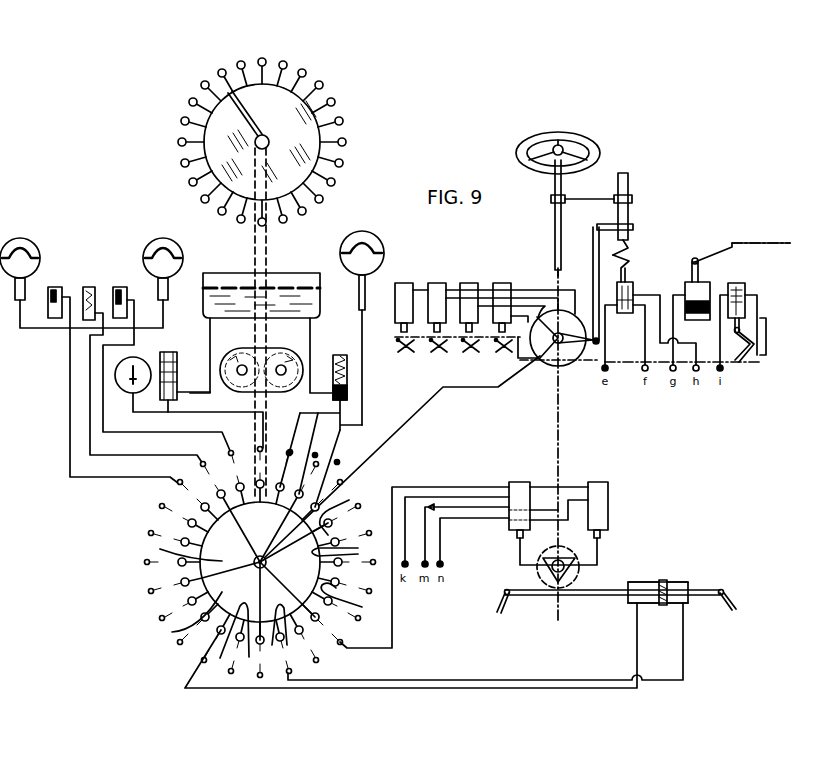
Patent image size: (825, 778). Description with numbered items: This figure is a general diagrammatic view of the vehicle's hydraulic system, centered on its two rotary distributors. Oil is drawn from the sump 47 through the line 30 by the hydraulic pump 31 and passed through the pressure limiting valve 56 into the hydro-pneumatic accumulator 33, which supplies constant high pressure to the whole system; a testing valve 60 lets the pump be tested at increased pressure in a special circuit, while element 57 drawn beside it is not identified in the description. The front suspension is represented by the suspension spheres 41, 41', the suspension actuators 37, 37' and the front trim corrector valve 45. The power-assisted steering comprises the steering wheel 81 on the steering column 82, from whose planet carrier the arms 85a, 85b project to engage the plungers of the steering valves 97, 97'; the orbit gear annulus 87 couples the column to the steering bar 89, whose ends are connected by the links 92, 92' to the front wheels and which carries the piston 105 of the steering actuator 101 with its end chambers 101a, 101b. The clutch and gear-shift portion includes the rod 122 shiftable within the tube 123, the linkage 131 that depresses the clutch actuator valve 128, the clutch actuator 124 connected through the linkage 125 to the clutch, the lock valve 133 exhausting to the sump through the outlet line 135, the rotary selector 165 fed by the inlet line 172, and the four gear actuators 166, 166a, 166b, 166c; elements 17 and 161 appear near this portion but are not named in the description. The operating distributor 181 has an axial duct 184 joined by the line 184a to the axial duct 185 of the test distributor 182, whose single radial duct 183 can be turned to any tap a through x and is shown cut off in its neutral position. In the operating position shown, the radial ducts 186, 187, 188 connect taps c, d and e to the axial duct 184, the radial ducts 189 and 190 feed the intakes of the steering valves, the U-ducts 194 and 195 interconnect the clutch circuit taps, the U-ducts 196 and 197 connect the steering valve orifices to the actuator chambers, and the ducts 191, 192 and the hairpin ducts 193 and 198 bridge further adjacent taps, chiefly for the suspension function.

The test distributor 182 is at (307, 111).
The radial duct 183 is at (246, 115).
The axial duct 185 is at (276, 145).
The line 184a is at (261, 280).
The sump 47 is at (311, 275).
The hydro-pneumatic accumulator 33 is at (376, 238).
The front suspension sphere 41 is at (81, 276).
The front suspension sphere 41' is at (158, 262).
The suspension actuator 37 is at (113, 374).
The front trim corrector valve 45 is at (89, 287).
The suspension actuator 37' is at (167, 359).
The hydraulic pump 31 is at (240, 353).
The line 30 is at (266, 345).
The pressure limiting valve 56 is at (333, 364).
The gauge 57 is at (150, 354).
The testing valve 60 is at (172, 352).
The steering wheel 81 is at (574, 137).
The steering column 82 is at (551, 199).
The tube 123 is at (628, 180).
The rod 122 is at (628, 247).
The linkage 131 is at (626, 262).
The clutch actuator valve 128 is at (633, 293).
The clutch actuator 124 is at (691, 313).
The linkage 125 is at (766, 236).
The clutch and gear lock valve 133 is at (745, 294).
The outlet line 135 is at (788, 330).
The pipe 17 is at (593, 272).
The gear actuator 166c is at (403, 283).
The gear actuator 166 is at (437, 283).
The gear actuator 166a is at (469, 283).
The gear actuator 166b is at (506, 283).
The rotary selector 165 is at (550, 362).
The pointer 161 is at (590, 364).
The inlet line 172 is at (452, 388).
The radial duct 190 is at (260, 562).
The radial duct 192 is at (236, 536).
The radial duct 191 is at (228, 572).
The axial duct 184 is at (287, 589).
The operating distributor 181 is at (176, 551).
The hairpin duct 193 is at (284, 450).
The radial duct 186 is at (312, 453).
The radial duct 187 is at (335, 468).
The radial duct 188 is at (347, 509).
The U-duct 194 is at (346, 548).
The U-duct 195 is at (353, 600).
The U-duct 196 is at (274, 616).
The U-duct 197 is at (223, 641).
The hairpin duct 198 is at (182, 616).
The radial duct 189 is at (347, 650).
The steering valve 97 is at (544, 494).
The steering valve 97' is at (594, 493).
The arm 85a is at (519, 554).
The arm 85b is at (600, 554).
The orbit gear annulus 87 is at (541, 566).
The steering bar 89 is at (610, 596).
The link 92 is at (512, 604).
The link 92' is at (725, 611).
The steering actuator 101 is at (675, 578).
The end chamber 101a is at (640, 587).
The end chamber 101b is at (690, 587).
The piston 105 is at (663, 605).